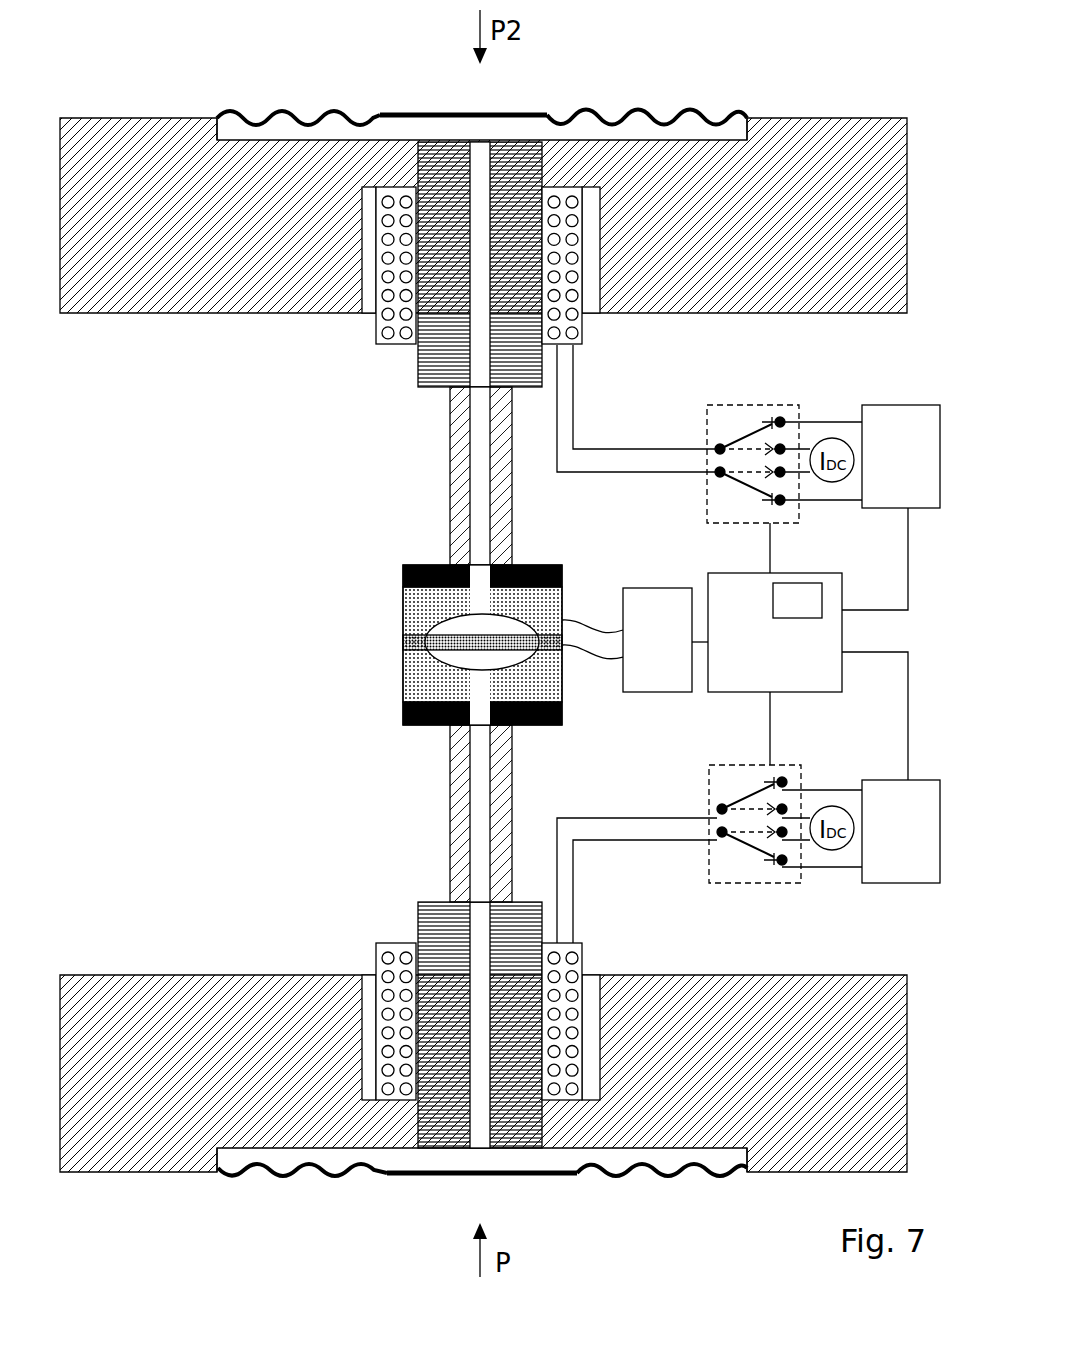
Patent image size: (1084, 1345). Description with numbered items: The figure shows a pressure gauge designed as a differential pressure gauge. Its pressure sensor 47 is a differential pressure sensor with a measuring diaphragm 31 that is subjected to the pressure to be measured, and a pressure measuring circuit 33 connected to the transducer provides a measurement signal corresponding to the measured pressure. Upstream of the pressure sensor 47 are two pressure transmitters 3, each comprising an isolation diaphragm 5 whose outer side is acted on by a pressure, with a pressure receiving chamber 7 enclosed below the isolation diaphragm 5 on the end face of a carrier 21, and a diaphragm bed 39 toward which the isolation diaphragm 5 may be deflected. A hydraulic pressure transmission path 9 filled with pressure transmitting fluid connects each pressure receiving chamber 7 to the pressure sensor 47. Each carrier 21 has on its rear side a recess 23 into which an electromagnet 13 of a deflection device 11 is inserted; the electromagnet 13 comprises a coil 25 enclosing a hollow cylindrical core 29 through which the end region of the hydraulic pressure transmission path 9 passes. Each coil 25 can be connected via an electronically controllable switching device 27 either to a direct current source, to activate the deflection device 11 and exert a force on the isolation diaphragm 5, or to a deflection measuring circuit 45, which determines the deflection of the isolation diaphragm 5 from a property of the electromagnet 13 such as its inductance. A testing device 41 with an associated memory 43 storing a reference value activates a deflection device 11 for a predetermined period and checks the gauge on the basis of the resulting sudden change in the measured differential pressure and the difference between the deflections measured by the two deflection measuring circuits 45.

The pressure transmitter 3 is at (196, 345).
The isolation diaphragm 5 is at (540, 115).
The pressure receiving chamber 7 is at (605, 130).
The hydraulic pressure transmission path 9 is at (470, 460).
The deflection device 11 is at (372, 271).
The electromagnet 13 is at (390, 1021).
The carrier 21 is at (740, 265).
The recess 23 is at (591, 258).
The coil 25 is at (572, 297).
The switching device 27 is at (706, 493).
The core 29 is at (435, 358).
The measuring diaphragm 31 is at (455, 645).
The pressure measuring circuit 33 is at (635, 640).
The diaphragm bed 39 is at (398, 140).
The testing device 41 is at (808, 644).
The memory 43 is at (797, 600).
The deflection measuring circuit 45 is at (860, 644).
The pressure sensor 47 is at (417, 645).